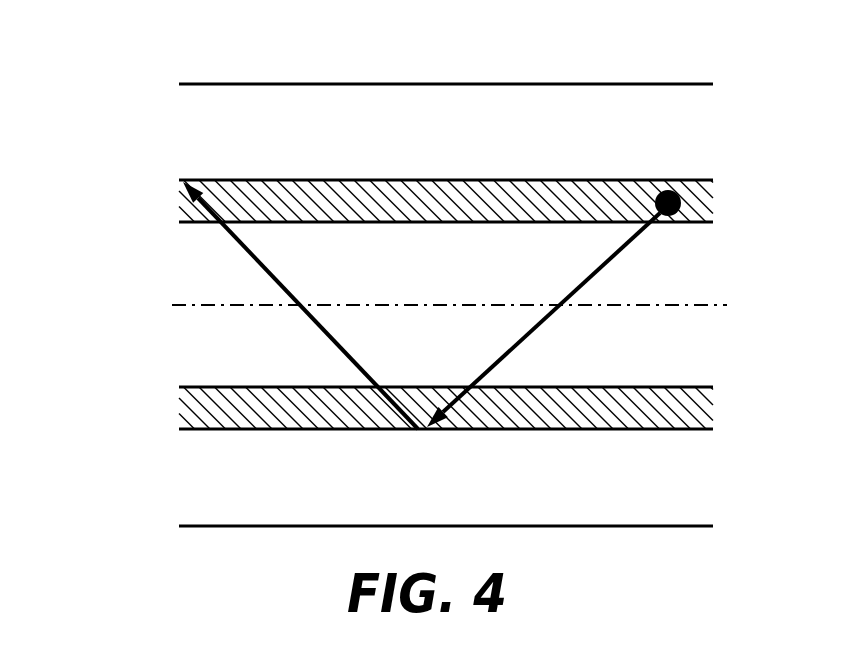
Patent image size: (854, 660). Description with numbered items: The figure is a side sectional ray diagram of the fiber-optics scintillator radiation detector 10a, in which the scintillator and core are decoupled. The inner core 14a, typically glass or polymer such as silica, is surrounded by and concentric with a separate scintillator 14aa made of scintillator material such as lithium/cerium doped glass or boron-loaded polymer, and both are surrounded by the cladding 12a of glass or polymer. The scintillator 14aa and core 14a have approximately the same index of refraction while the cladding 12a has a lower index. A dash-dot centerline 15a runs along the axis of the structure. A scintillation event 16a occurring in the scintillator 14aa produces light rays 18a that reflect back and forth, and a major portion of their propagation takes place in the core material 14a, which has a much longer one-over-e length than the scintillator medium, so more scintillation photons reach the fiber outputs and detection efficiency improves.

The fiber-optics scintillator radiation detector 10a is at (103, 52).
The cladding 12a is at (529, 108).
The core 14a is at (387, 279).
The scintillator 14aa is at (302, 202).
The center axis 15a is at (222, 307).
The scintillation event 16a is at (670, 182).
The light rays 18a is at (607, 262).